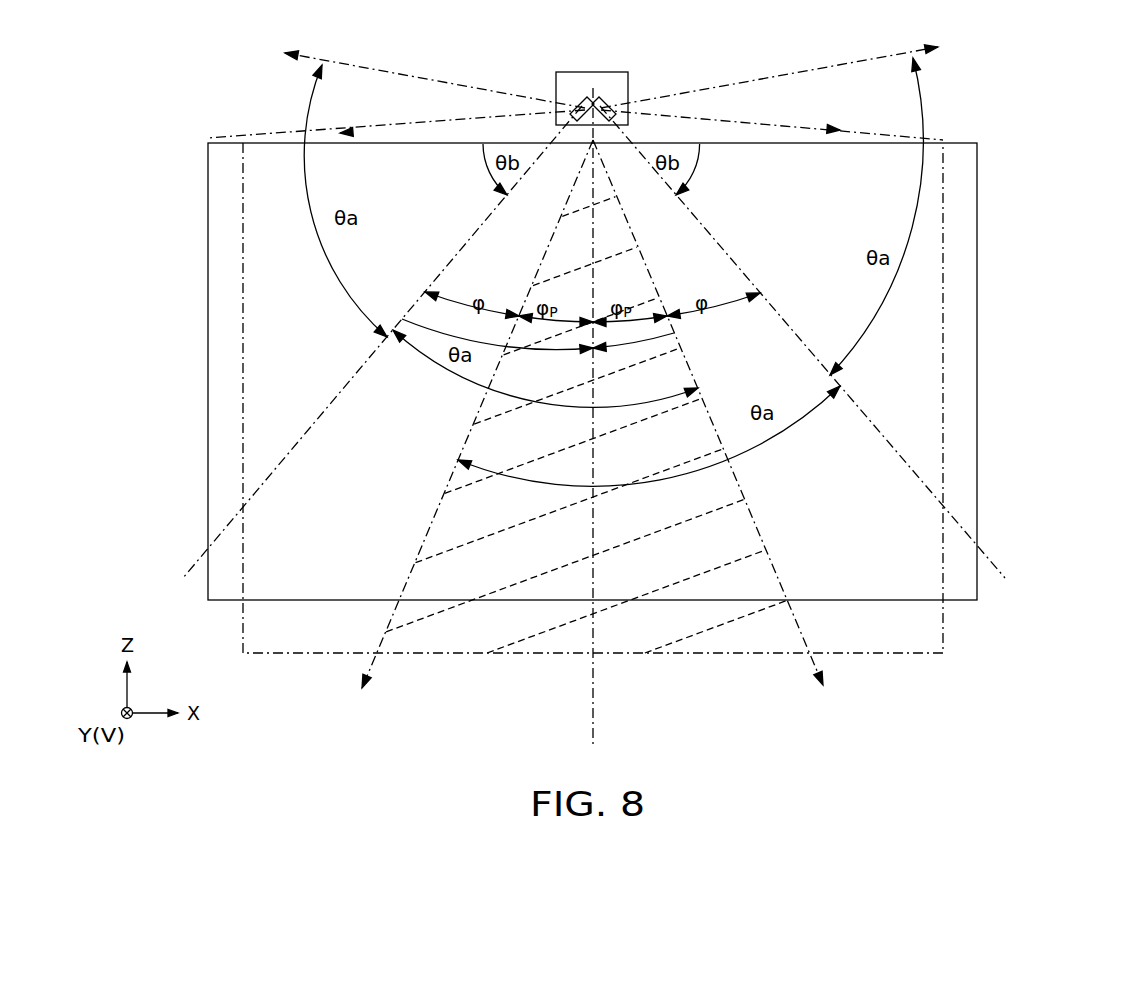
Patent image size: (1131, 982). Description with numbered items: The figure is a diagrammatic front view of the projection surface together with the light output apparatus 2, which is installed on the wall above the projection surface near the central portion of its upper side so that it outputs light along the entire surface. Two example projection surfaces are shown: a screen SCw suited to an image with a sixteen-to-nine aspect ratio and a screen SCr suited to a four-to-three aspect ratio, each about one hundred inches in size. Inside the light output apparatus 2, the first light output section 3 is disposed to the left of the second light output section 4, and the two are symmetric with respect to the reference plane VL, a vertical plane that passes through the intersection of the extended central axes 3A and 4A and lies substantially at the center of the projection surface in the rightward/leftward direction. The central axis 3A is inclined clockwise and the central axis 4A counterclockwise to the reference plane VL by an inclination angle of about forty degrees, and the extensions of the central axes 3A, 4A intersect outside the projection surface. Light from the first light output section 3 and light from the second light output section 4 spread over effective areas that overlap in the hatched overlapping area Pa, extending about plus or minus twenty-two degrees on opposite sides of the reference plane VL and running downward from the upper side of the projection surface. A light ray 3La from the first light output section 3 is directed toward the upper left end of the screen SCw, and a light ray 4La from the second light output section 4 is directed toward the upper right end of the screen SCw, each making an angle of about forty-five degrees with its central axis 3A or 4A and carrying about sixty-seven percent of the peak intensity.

The light output apparatus 2 is at (628, 77).
The first light output section 3 is at (590, 98).
The second light output section 4 is at (597, 98).
The light ray 3La is at (413, 123).
The light ray 4La is at (777, 127).
The central axis 3A is at (333, 398).
The central axis 4A is at (853, 398).
The overlapping area Pa is at (760, 537).
The reference plane VL is at (595, 733).
The screen SCw is at (977, 453).
The screen SCr is at (943, 627).